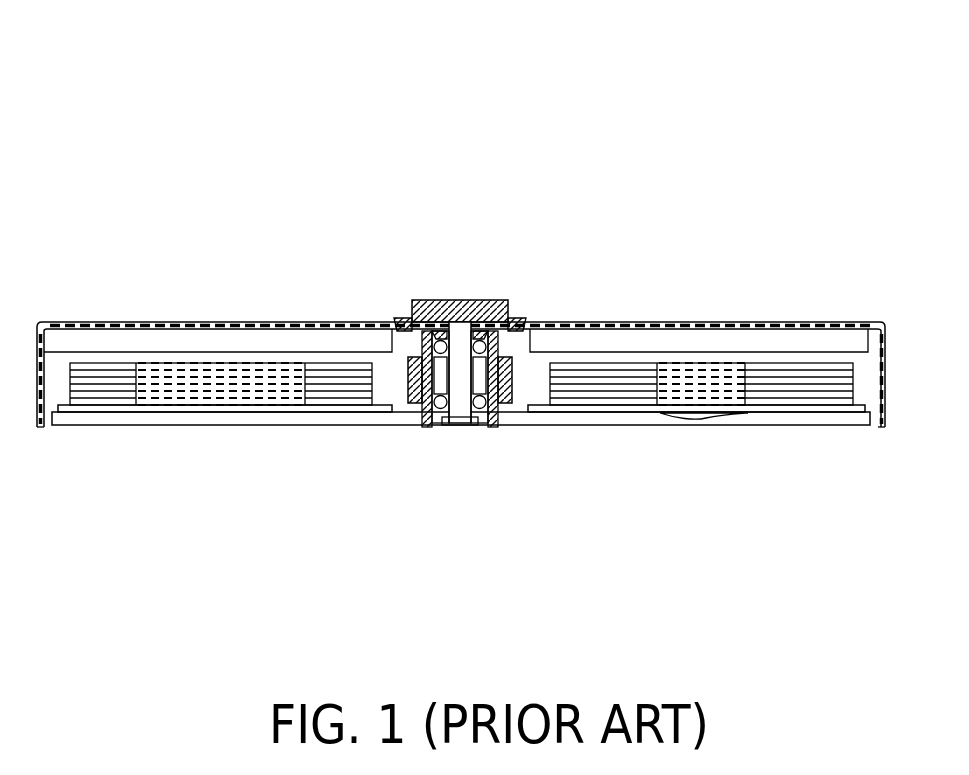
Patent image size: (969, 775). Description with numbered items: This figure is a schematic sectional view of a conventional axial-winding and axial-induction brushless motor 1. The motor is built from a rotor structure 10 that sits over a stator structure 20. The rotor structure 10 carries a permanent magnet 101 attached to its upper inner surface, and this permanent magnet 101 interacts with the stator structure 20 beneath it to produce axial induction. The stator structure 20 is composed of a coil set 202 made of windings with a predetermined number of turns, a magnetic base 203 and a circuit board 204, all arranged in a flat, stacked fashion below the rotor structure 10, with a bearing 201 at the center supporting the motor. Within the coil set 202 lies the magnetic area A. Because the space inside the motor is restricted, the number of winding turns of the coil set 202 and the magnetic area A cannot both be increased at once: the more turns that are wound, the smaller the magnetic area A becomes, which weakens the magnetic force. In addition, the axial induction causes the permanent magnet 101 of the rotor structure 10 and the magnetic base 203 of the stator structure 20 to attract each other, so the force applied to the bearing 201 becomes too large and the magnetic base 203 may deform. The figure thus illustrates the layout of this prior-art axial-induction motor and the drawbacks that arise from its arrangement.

The axial-winding and axial-induction brushless motor 1 is at (123, 52).
The rotor structure 10 is at (215, 294).
The permanent magnet 101 is at (715, 345).
The stator structure 20 is at (216, 460).
The bearing 201 is at (457, 380).
The coil set 202 is at (793, 380).
The magnetic base 203 is at (602, 425).
The circuit board 204 is at (282, 407).
The magnetic area A is at (704, 438).